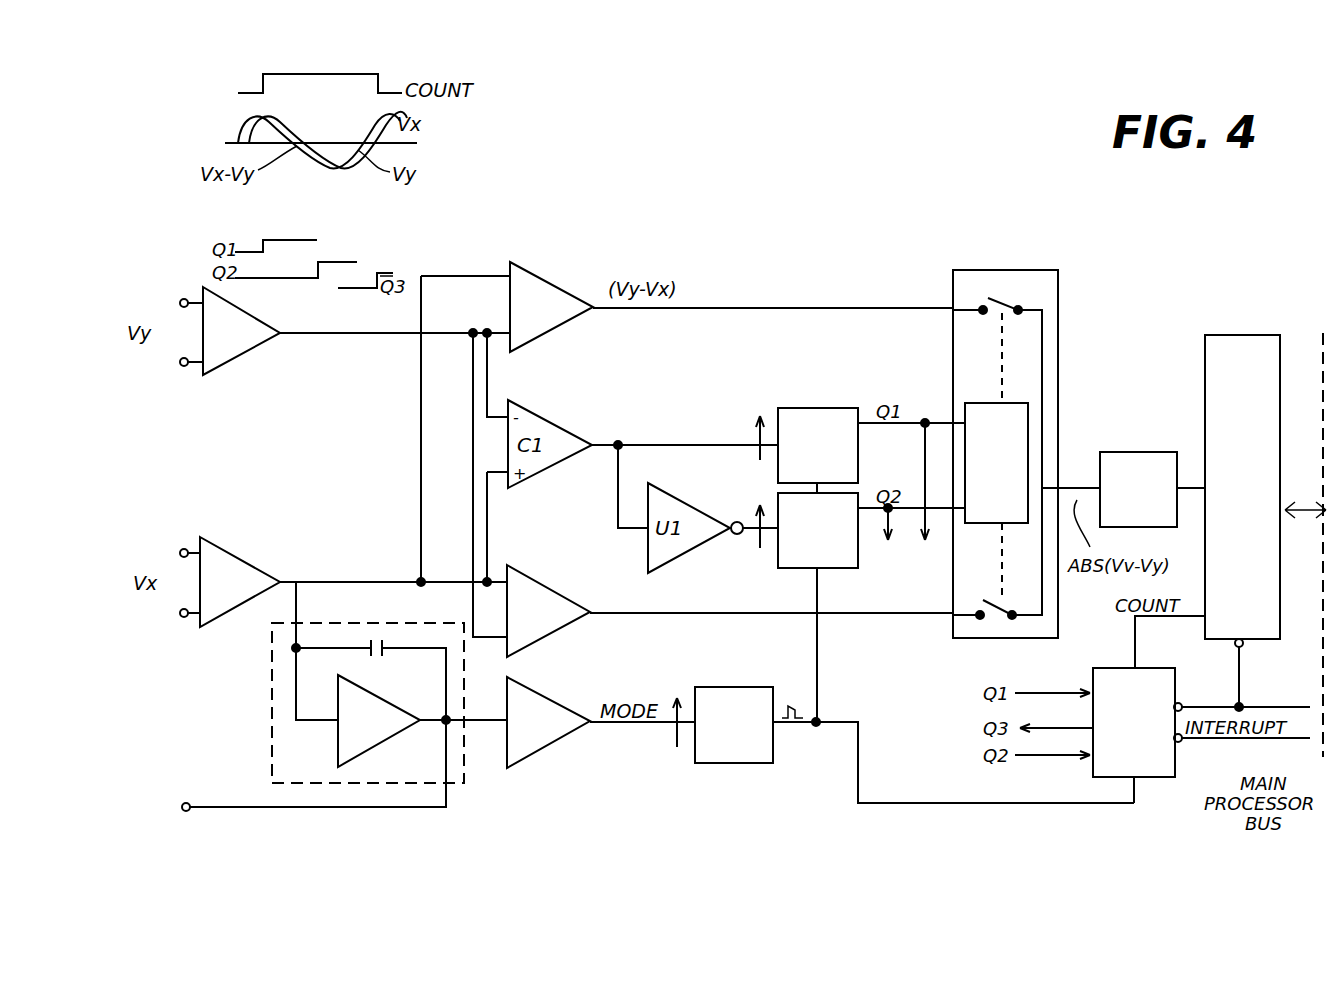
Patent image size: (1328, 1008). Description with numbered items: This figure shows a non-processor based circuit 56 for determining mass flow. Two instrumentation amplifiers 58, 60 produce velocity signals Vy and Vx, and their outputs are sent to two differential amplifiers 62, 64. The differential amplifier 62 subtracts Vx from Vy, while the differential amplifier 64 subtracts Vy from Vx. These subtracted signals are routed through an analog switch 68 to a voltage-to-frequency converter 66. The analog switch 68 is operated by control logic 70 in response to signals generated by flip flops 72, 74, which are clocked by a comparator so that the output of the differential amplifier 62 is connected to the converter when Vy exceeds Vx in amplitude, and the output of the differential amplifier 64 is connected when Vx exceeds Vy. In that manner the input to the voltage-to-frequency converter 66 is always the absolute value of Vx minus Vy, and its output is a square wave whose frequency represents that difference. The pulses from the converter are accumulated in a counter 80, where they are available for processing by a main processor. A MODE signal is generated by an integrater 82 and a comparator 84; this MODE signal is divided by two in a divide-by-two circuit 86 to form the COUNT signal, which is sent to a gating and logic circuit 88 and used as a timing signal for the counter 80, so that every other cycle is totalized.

The circuit 56 is at (668, 255).
The instrumentation amplifier 58 is at (256, 350).
The instrumentation amplifier 60 is at (248, 597).
The differential amplifier 62 is at (555, 280).
The differential amplifier 64 is at (532, 630).
The voltage-to-frequency converter 66 is at (1128, 458).
The analog switch 68 is at (1055, 308).
The control logic 70 is at (985, 523).
The flip flop 72 is at (845, 446).
The flip flop 74 is at (843, 553).
The counter 80 is at (1212, 418).
The integrater 82 is at (426, 686).
The comparator 84 is at (522, 745).
The divide-by-two circuit 86 is at (733, 763).
The gating and logic circuit 88 is at (1098, 768).